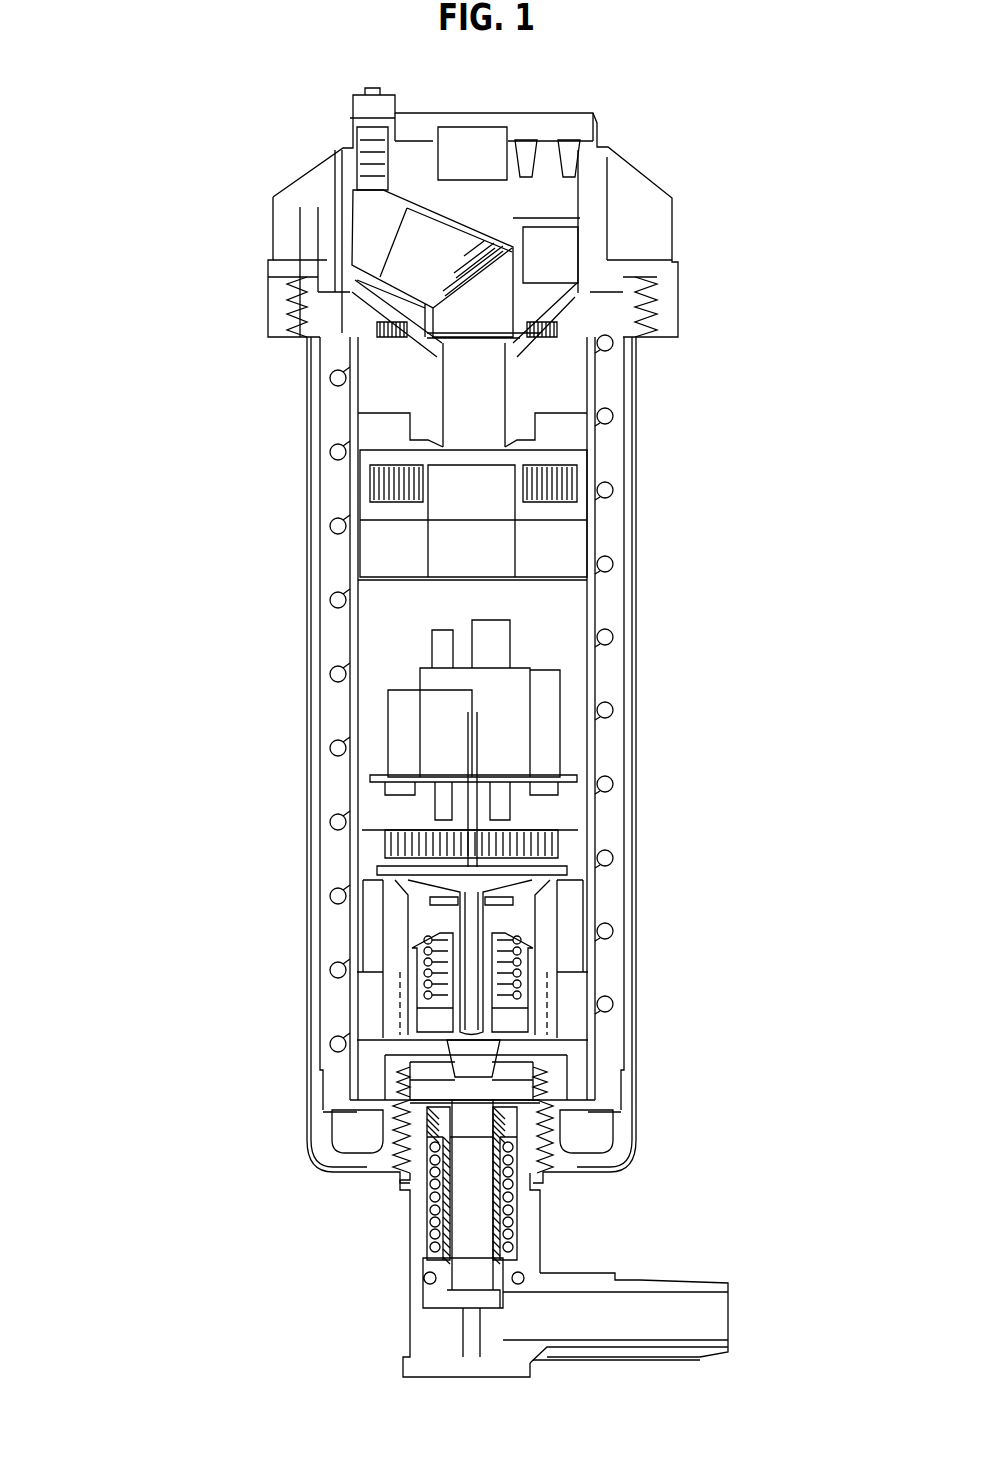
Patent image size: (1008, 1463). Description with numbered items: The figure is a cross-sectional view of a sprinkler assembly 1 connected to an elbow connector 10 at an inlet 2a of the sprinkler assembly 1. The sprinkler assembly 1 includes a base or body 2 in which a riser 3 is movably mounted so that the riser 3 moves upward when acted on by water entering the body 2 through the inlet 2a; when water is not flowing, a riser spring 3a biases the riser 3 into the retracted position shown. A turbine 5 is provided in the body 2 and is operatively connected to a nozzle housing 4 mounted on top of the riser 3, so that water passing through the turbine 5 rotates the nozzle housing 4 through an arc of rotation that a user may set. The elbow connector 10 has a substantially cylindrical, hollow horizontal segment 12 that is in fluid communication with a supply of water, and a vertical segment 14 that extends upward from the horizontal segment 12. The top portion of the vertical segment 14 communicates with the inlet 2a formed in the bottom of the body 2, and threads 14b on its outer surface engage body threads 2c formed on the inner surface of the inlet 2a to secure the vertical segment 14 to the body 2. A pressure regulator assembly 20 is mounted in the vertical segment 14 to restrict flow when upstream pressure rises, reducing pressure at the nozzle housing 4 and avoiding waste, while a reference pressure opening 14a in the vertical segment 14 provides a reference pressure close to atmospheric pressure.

The sprinkler assembly 1 is at (218, 293).
The body 2 is at (632, 520).
The inlet 2a is at (565, 1140).
The body threads 2c is at (545, 1097).
The riser 3 is at (593, 827).
The riser spring 3a is at (613, 708).
The nozzle housing 4 is at (668, 232).
The turbine 5 is at (410, 853).
The elbow connector 10 is at (545, 1270).
The horizontal segment 12 is at (645, 1278).
The vertical segment 14 is at (413, 1292).
The reference pressure opening 14a is at (415, 1232).
The threads 14b is at (400, 1120).
The pressure regulator assembly 20 is at (446, 1185).